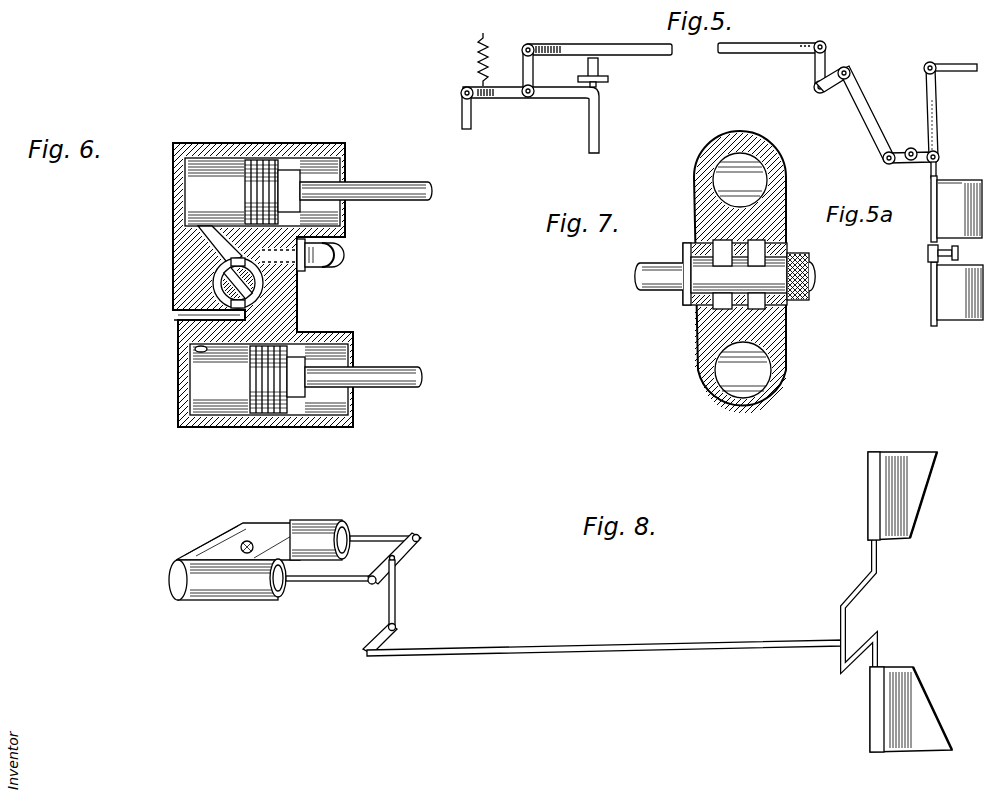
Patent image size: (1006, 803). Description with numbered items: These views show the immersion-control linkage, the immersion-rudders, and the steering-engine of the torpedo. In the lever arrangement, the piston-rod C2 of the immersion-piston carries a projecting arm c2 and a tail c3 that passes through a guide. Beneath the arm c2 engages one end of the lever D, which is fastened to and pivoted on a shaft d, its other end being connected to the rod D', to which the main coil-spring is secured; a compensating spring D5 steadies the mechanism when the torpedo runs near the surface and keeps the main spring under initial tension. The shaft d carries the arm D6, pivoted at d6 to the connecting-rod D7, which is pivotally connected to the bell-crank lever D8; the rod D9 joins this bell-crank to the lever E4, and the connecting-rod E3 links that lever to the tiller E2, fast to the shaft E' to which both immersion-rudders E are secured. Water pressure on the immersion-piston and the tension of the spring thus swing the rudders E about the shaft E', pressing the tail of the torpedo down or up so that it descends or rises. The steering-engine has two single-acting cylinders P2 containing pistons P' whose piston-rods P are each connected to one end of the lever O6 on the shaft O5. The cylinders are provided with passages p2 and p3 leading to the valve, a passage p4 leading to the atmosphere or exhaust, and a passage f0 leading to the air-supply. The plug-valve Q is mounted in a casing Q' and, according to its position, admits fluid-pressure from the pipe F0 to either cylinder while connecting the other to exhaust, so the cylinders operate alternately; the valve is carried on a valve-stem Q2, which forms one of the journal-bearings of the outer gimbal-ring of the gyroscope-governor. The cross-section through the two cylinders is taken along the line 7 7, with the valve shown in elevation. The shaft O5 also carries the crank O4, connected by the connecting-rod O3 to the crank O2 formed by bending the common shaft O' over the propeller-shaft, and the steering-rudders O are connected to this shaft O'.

In FIG. 6, the section line 7 is at (233, 425).
In FIG. 6, the piston-rod P is at (338, 286).
In FIG. 8, the piston-rod P is at (351, 563).
In FIG. 6, the piston P' is at (270, 269).
In FIG. 8, the piston P' is at (268, 563).
In FIG. 6, the cylinder P2 is at (254, 156).
In FIG. 7, the cylinder P2 is at (722, 184).
In FIG. 6, the passage p2 is at (206, 235).
In FIG. 7, the passage p2 is at (780, 226).
In FIG. 6, the passage p3 is at (198, 351).
In FIG. 7, the passage p3 is at (710, 330).
In FIG. 6, the passage p4 is at (186, 320).
In FIG. 7, the passage p4 is at (780, 312).
In FIG. 6, the plug-valve Q is at (199, 283).
In FIG. 7, the plug-valve Q is at (720, 293).
In FIG. 6, the casing Q' is at (198, 279).
In FIG. 7, the casing Q' is at (802, 265).
In FIG. 7, the valve-stem Q2 is at (645, 288).
In FIG. 8, the valve-stem Q2 is at (254, 542).
In FIG. 6, the pipe F0 is at (346, 256).
In FIG. 6, the passage f0 is at (300, 272).
In FIG. 7, the passage f0 is at (712, 248).
In FIG. 5, the lever D is at (531, 120).
In FIG. 5, the rod D' is at (480, 118).
In FIG. 5, the compensating spring D5 is at (478, 54).
In FIG. 5, the arm D6 is at (521, 70).
In FIG. 5, the pivot d6 is at (536, 48).
In FIG. 5, the shaft d is at (527, 98).
In FIG. 5, the connecting-rod D7 is at (652, 56).
In FIG. 5, the bell-crank lever D8 is at (772, 67).
In FIG. 5, the rod D9 is at (860, 108).
In FIG. 5, the piston-rod C2 is at (598, 62).
In FIG. 5, the projecting arm c2 is at (606, 83).
In FIG. 5, the tail c3 is at (600, 125).
In FIG. 5, the immersion-rudder E is at (953, 49).
In FIG. 5A, the immersion-rudder E is at (959, 267).
In FIG. 5, the shaft E' is at (940, 102).
In FIG. 5A, the shaft E' is at (916, 251).
In FIG. 5, the tiller E2 is at (927, 76).
In FIG. 5A, the tiller E2 is at (928, 253).
In FIG. 5, the connecting-rod E3 is at (940, 112).
In FIG. 5, the lever E4 is at (918, 143).
In FIG. 8, the steering-rudder O is at (885, 602).
In FIG. 8, the shaft O' is at (873, 602).
In FIG. 8, the crank O2 is at (841, 622).
In FIG. 8, the connecting-rod O3 is at (624, 652).
In FIG. 8, the crank O4 is at (394, 640).
In FIG. 8, the shaft O5 is at (400, 602).
In FIG. 8, the lever O6 is at (410, 548).